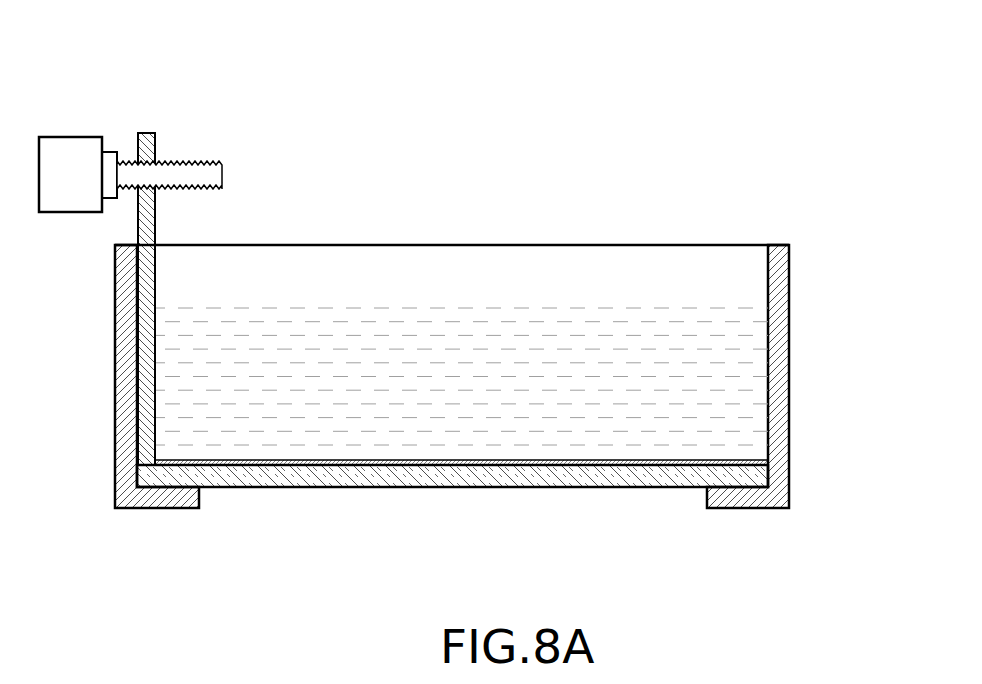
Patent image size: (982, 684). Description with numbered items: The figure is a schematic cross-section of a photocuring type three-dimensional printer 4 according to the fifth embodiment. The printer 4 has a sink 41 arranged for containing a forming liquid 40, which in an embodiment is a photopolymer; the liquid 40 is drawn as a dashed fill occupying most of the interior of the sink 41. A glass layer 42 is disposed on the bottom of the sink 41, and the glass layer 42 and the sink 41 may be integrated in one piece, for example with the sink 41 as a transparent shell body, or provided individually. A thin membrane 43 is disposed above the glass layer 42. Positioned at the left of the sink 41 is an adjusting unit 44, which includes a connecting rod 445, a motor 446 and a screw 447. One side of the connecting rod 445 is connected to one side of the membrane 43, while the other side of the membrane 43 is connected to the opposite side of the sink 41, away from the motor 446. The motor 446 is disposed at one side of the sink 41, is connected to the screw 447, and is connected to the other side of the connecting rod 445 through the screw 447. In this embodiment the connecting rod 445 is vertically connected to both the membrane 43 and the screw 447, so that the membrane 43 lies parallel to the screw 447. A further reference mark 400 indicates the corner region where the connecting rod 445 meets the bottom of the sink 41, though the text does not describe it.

The 3D printer 4 is at (485, 127).
The forming liquid 40 is at (700, 337).
The sink 41 is at (778, 268).
The glass layer 42 is at (400, 475).
The membrane 43 is at (582, 462).
The adjusting unit 44 is at (222, 53).
The connecting rod 445 is at (145, 143).
The motor 446 is at (56, 153).
The screw 447 is at (188, 173).
The corner gap 400 is at (150, 467).